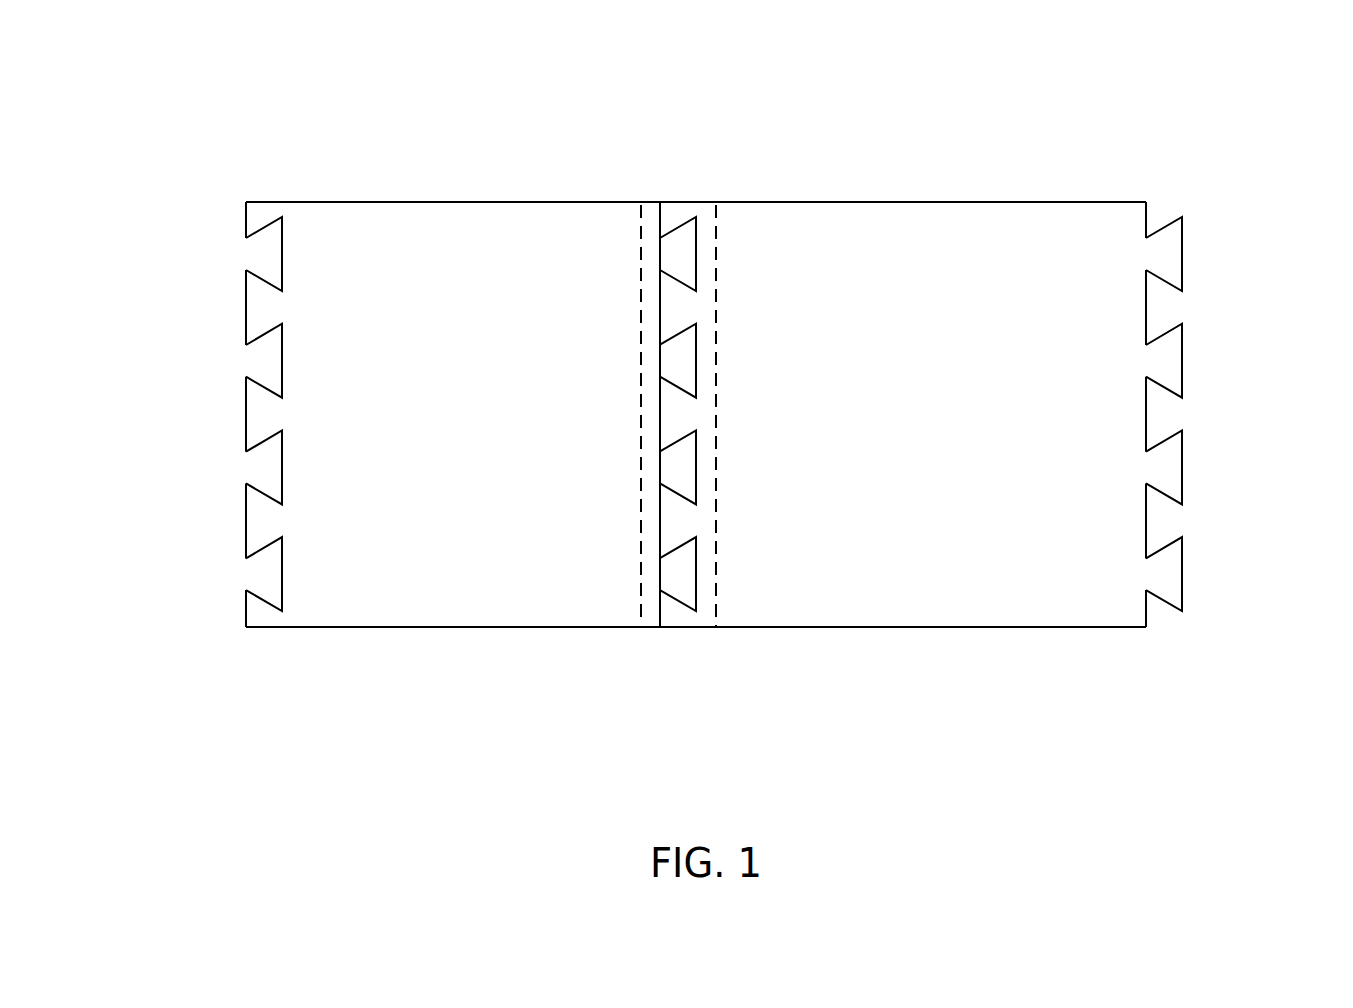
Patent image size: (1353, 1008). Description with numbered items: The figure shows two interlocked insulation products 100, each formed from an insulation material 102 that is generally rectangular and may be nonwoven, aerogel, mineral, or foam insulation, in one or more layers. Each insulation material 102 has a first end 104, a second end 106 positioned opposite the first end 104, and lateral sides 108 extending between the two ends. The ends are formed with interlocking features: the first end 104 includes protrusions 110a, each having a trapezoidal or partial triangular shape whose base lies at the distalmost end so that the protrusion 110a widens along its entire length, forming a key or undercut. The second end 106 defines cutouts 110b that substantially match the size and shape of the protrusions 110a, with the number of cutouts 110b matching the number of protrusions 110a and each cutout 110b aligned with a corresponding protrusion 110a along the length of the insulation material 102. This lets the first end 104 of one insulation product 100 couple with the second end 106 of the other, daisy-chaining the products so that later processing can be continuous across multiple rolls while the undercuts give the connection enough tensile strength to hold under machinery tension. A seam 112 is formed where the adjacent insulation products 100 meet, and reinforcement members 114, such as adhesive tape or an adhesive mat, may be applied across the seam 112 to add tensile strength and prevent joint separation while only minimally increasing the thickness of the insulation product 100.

The insulation product 100 is at (701, 428).
The insulation material 102 is at (462, 222).
The first end 104 is at (1233, 513).
The second end 106 is at (162, 357).
The lateral sides 108 is at (565, 202).
The protrusion 110a is at (1165, 248).
The cutout 110b is at (275, 248).
The seam 112 is at (696, 590).
The reinforcement member 114 is at (717, 250).